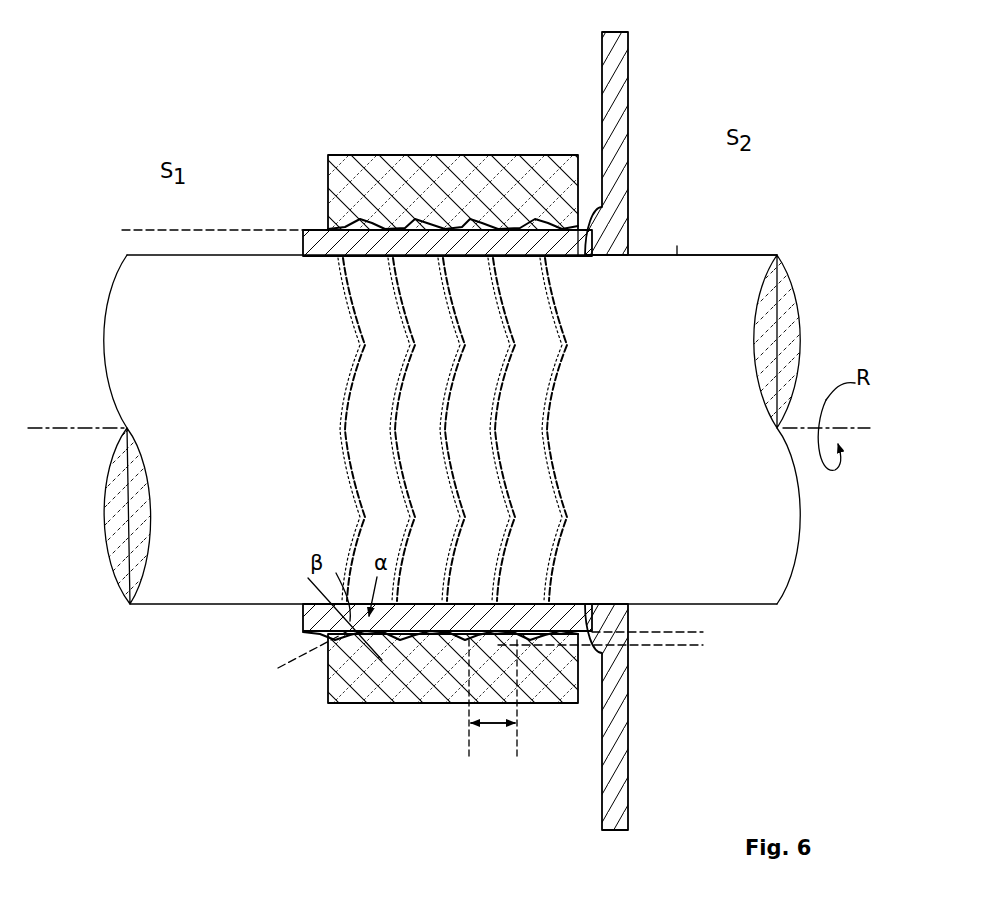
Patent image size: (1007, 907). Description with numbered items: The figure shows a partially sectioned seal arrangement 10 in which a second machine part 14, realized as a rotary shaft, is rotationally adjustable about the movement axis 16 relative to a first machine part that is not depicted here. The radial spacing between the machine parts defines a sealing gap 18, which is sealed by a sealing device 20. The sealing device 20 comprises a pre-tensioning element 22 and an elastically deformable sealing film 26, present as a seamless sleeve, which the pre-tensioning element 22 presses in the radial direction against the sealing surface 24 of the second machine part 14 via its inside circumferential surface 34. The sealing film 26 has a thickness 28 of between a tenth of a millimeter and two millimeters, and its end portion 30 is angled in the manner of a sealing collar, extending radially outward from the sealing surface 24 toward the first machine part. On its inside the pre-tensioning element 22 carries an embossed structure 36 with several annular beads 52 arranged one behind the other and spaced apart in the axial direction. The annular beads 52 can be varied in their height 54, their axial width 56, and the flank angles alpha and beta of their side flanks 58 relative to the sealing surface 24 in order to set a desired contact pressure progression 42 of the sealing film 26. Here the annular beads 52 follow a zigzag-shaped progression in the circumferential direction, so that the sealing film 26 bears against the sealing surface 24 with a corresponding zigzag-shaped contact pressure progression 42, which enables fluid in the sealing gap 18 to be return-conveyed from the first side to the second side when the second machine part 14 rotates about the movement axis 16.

The seal arrangement 10 is at (762, 86).
The second machine part 14 is at (640, 474).
The movement axis 16 is at (76, 432).
The sealing gap 18 is at (667, 251).
The sealing device 20 is at (409, 121).
The pre-tensioning element 22 is at (332, 177).
The sealing surface 24 is at (677, 252).
The sealing film 26 is at (310, 240).
The thickness 28 is at (116, 230).
The end portion 30 is at (615, 133).
The inside circumferential surface 34 is at (572, 236).
The embossed structure 36 is at (470, 233).
The contact pressure progression 42 is at (432, 443).
The annular beads 52 is at (560, 636).
The height 54 is at (703, 632).
The axial width 56 is at (492, 727).
The side flanks 58 is at (382, 630).